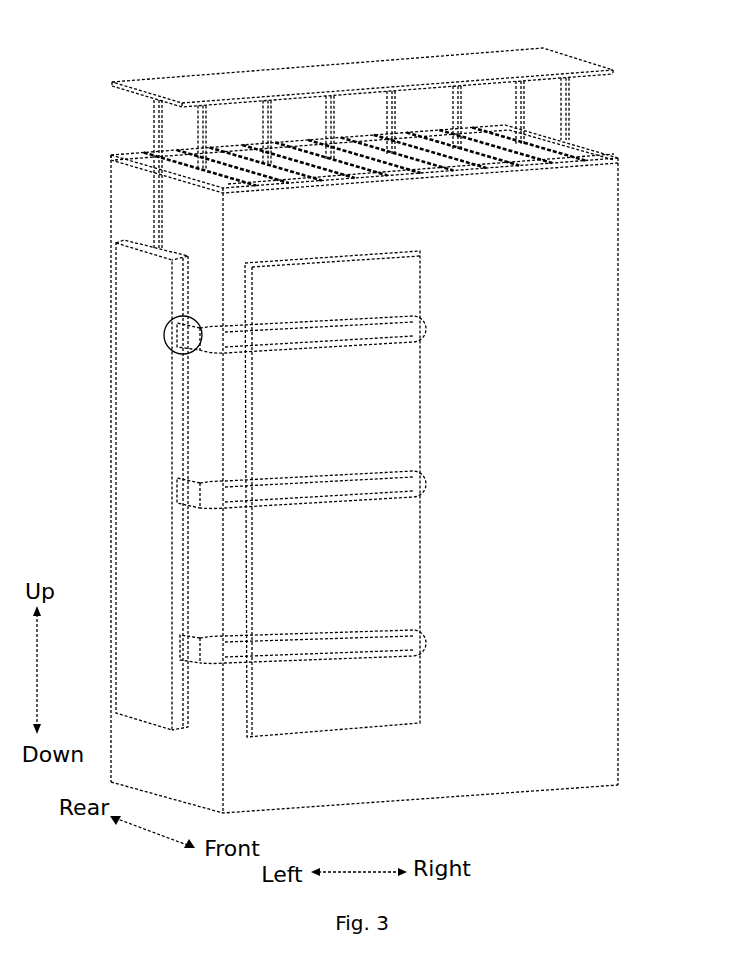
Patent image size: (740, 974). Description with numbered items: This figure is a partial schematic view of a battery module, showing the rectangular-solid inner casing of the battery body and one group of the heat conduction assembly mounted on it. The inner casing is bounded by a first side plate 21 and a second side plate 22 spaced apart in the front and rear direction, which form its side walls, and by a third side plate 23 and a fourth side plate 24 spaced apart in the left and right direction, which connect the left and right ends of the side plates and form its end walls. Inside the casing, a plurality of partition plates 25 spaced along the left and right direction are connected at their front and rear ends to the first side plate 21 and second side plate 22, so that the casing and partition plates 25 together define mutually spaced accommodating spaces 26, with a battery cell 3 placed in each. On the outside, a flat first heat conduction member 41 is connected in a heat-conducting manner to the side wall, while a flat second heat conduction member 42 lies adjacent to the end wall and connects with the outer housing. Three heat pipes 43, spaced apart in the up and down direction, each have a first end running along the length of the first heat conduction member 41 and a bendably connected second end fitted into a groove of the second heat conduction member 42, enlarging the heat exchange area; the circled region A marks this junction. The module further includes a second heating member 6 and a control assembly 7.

The battery cell 3 is at (552, 156).
The second heating member 6 is at (187, 298).
The control assembly 7 is at (423, 68).
The first side plate 21 is at (592, 630).
The second side plate 22 is at (120, 156).
The third side plate 23 is at (122, 207).
The fourth side plate 24 is at (597, 156).
The partition plate 25 is at (560, 155).
The accommodating space 26 is at (611, 160).
The first heat conduction member 41 is at (402, 430).
The second heat conduction member 42 is at (130, 557).
The heat pipe 43 is at (420, 330).
The detail region A is at (166, 330).